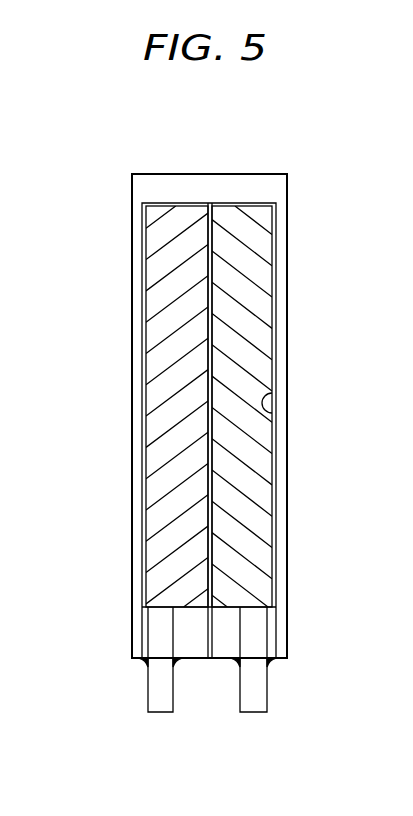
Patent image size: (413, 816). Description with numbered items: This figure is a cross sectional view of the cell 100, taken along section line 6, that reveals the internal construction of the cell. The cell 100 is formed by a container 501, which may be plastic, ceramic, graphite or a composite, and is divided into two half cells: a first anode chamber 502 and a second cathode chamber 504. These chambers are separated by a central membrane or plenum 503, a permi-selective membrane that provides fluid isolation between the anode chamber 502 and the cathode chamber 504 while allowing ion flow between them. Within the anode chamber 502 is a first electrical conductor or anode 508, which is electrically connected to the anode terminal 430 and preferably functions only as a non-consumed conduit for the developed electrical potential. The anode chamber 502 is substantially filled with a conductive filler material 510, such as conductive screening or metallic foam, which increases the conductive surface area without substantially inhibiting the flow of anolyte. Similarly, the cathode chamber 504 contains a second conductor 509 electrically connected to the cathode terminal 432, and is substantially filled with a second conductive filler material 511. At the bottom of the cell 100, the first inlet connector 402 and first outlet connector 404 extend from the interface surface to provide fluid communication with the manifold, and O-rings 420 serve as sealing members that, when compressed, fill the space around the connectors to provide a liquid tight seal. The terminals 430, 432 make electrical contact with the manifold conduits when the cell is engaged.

The section line 6 is at (231, 807).
The cell 100 is at (98, 236).
The first inlet connector 402 is at (158, 712).
The first outlet connector 404 is at (252, 712).
The O-ring 420 is at (142, 660).
The anode terminal 430 is at (142, 665).
The cathode terminal 432 is at (273, 665).
The container 501 is at (271, 174).
The anode chamber 502 is at (158, 298).
The plenum 503 is at (217, 217).
The cathode chamber 504 is at (266, 246).
The anode 508 is at (143, 390).
The second conductor 509 is at (272, 420).
The conductive filler material 510 is at (163, 445).
The second conductive filler material 511 is at (252, 320).